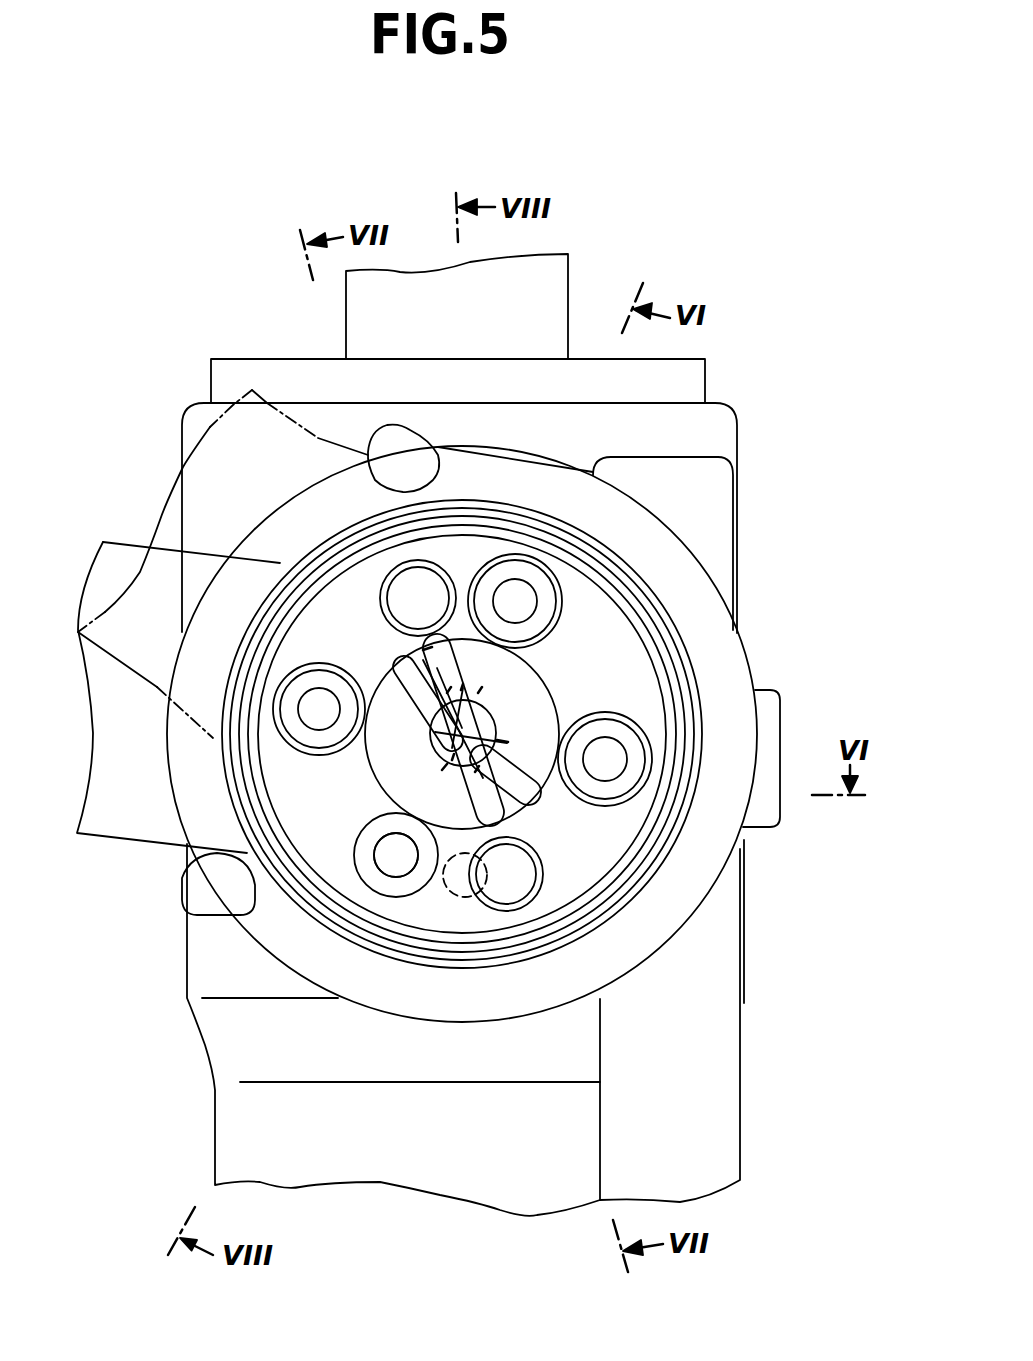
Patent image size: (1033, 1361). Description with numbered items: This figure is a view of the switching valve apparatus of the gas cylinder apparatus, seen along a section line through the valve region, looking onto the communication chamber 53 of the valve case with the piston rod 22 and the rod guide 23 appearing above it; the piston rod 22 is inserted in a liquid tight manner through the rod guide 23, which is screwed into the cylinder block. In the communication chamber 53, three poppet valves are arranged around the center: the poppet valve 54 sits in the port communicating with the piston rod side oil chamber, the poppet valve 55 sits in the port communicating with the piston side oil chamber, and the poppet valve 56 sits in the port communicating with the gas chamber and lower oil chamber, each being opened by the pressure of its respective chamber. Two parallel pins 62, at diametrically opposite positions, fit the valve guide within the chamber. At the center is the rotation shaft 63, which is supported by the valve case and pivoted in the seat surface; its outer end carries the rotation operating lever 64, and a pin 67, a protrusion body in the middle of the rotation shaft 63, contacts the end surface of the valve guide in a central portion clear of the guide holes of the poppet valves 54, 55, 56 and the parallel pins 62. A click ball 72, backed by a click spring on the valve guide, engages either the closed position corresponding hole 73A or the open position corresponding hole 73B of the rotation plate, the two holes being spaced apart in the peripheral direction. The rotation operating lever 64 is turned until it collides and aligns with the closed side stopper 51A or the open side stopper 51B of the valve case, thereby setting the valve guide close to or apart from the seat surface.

The piston rod 22 is at (552, 280).
The rod guide 23 is at (685, 378).
The closed side stopper 51A is at (393, 437).
The open side stopper 51B is at (197, 887).
The communication chamber 53 is at (643, 632).
The poppet valve 54 is at (319, 710).
The poppet valve 55 is at (607, 760).
The poppet valve 56 is at (520, 600).
The parallel pin 62 is at (414, 603).
The rotation shaft 63 is at (493, 713).
The rotation operating lever 64 is at (115, 543).
The pin 67 is at (560, 718).
The click ball 72 is at (365, 884).
The closed position corresponding hole 73A is at (393, 877).
The open position corresponding hole 73B is at (450, 890).